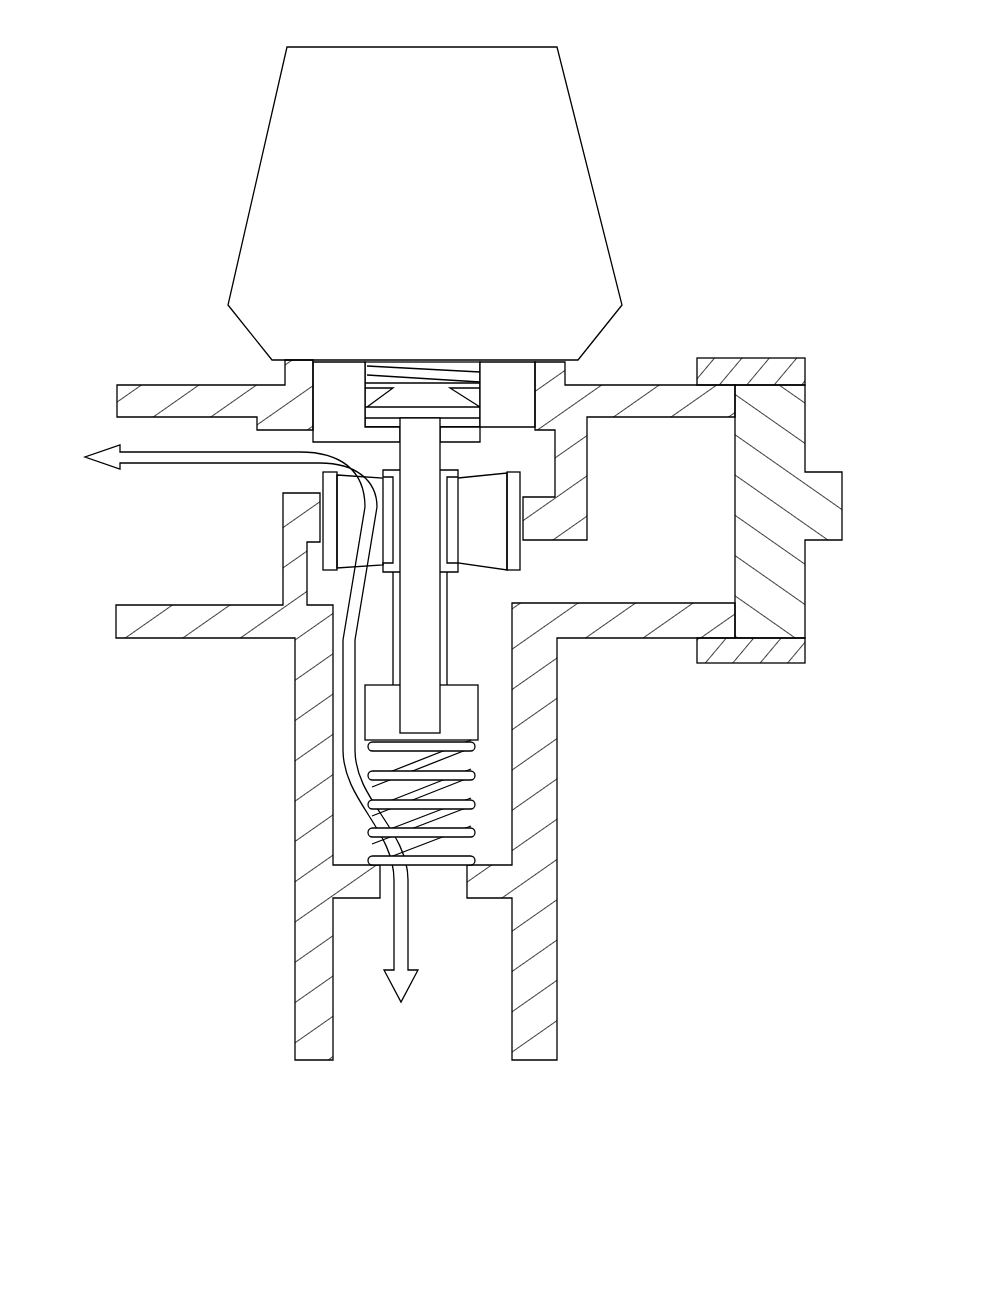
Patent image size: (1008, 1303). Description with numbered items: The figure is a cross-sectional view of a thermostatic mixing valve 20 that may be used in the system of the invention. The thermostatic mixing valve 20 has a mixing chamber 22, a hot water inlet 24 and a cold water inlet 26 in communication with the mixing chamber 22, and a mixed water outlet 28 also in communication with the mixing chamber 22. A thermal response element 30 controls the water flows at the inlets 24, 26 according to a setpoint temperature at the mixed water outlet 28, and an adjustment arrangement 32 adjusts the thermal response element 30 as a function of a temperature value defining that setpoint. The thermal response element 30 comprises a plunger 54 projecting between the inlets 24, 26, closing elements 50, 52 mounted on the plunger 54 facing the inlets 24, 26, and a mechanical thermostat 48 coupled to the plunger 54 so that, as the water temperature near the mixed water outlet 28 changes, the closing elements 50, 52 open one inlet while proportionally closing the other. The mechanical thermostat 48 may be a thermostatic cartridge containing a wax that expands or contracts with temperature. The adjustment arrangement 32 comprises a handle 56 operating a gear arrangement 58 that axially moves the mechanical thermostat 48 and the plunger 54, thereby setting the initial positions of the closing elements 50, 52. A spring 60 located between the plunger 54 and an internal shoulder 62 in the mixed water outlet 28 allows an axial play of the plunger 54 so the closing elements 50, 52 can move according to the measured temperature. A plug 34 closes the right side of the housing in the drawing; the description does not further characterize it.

The thermostatic mixing valve 20 is at (182, 872).
The mixing chamber 22 is at (485, 638).
The hot water inlet 24 is at (712, 470).
The cold water inlet 26 is at (157, 554).
The mixed water outlet 28 is at (468, 1033).
The thermal response element 30 is at (487, 720).
The adjustment arrangement 32 is at (658, 246).
The plug 34 is at (800, 590).
The mechanical thermostat 48 is at (417, 623).
The closing element 50 is at (513, 557).
The closing element 52 is at (328, 479).
The plunger 54 is at (375, 715).
The handle 56 is at (282, 132).
The gear arrangement 58 is at (375, 364).
The spring 60 is at (467, 780).
The internal shoulder 62 is at (493, 862).